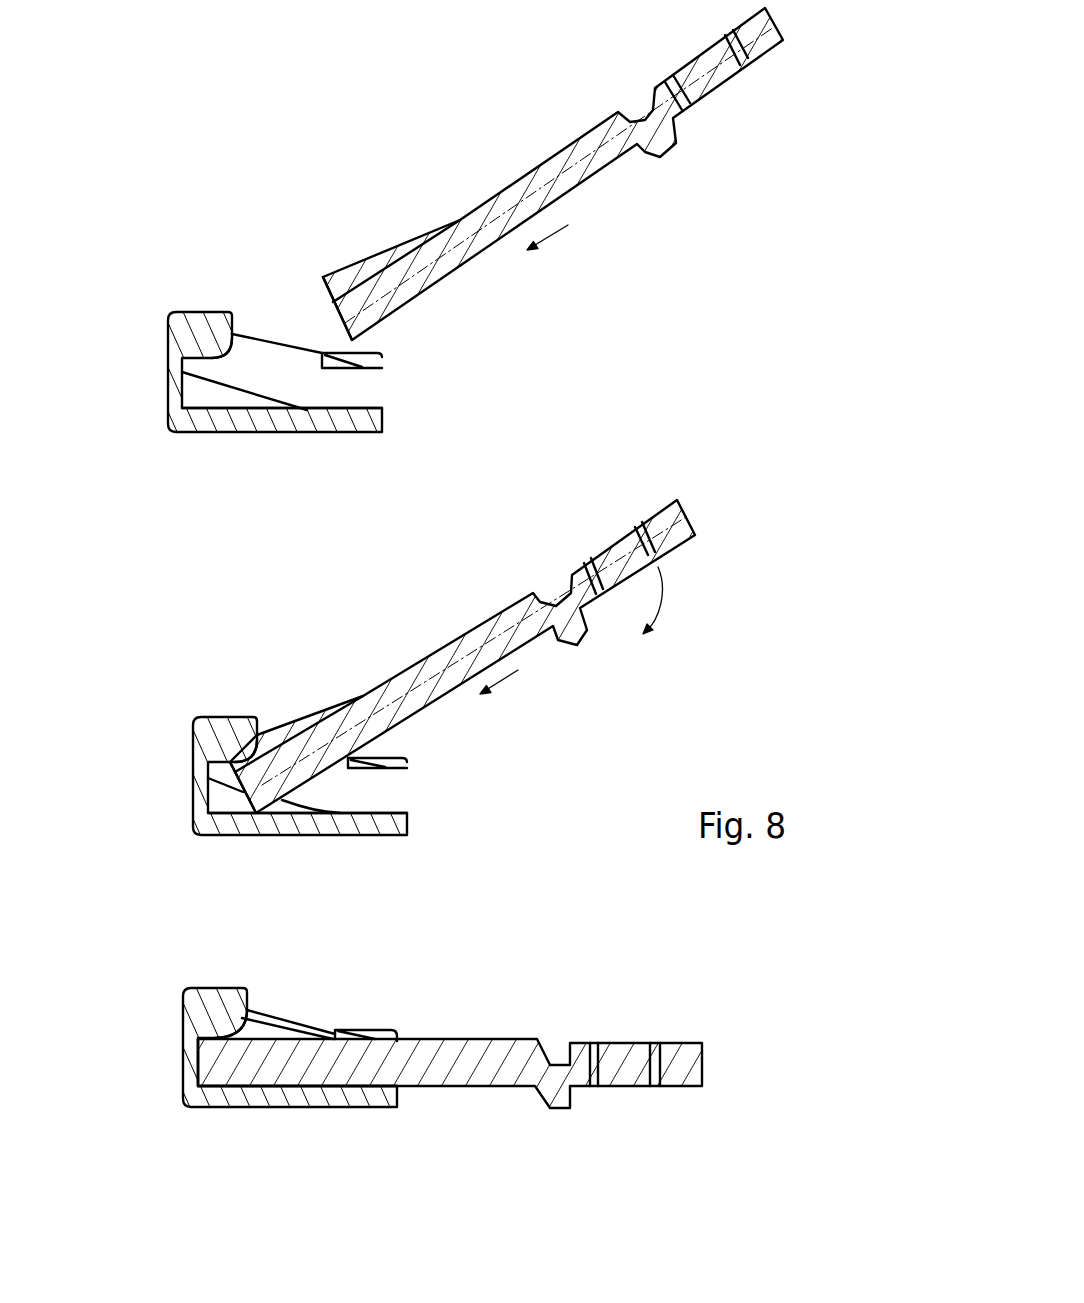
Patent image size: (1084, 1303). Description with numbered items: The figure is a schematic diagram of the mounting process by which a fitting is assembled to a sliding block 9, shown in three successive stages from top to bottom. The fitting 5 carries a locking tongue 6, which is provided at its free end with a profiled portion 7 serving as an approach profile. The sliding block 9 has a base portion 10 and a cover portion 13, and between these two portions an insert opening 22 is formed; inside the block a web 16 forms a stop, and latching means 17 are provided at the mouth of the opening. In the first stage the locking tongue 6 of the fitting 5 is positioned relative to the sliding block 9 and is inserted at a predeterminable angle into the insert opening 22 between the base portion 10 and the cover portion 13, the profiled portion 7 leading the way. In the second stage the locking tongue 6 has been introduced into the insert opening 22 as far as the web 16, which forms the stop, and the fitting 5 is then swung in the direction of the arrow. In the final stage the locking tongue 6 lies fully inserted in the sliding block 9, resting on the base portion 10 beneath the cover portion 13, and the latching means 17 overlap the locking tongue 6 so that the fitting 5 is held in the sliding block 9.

The fitting 5 is at (590, 162).
The locking tongue 6 is at (433, 260).
The profiled portion (approach profile) 7 is at (388, 258).
The sliding block 9 is at (195, 425).
The base portion 10 is at (275, 432).
The cover portion 13 is at (197, 312).
The web 16 is at (182, 372).
The latching means 17 is at (382, 355).
The insert opening 22 is at (265, 322).